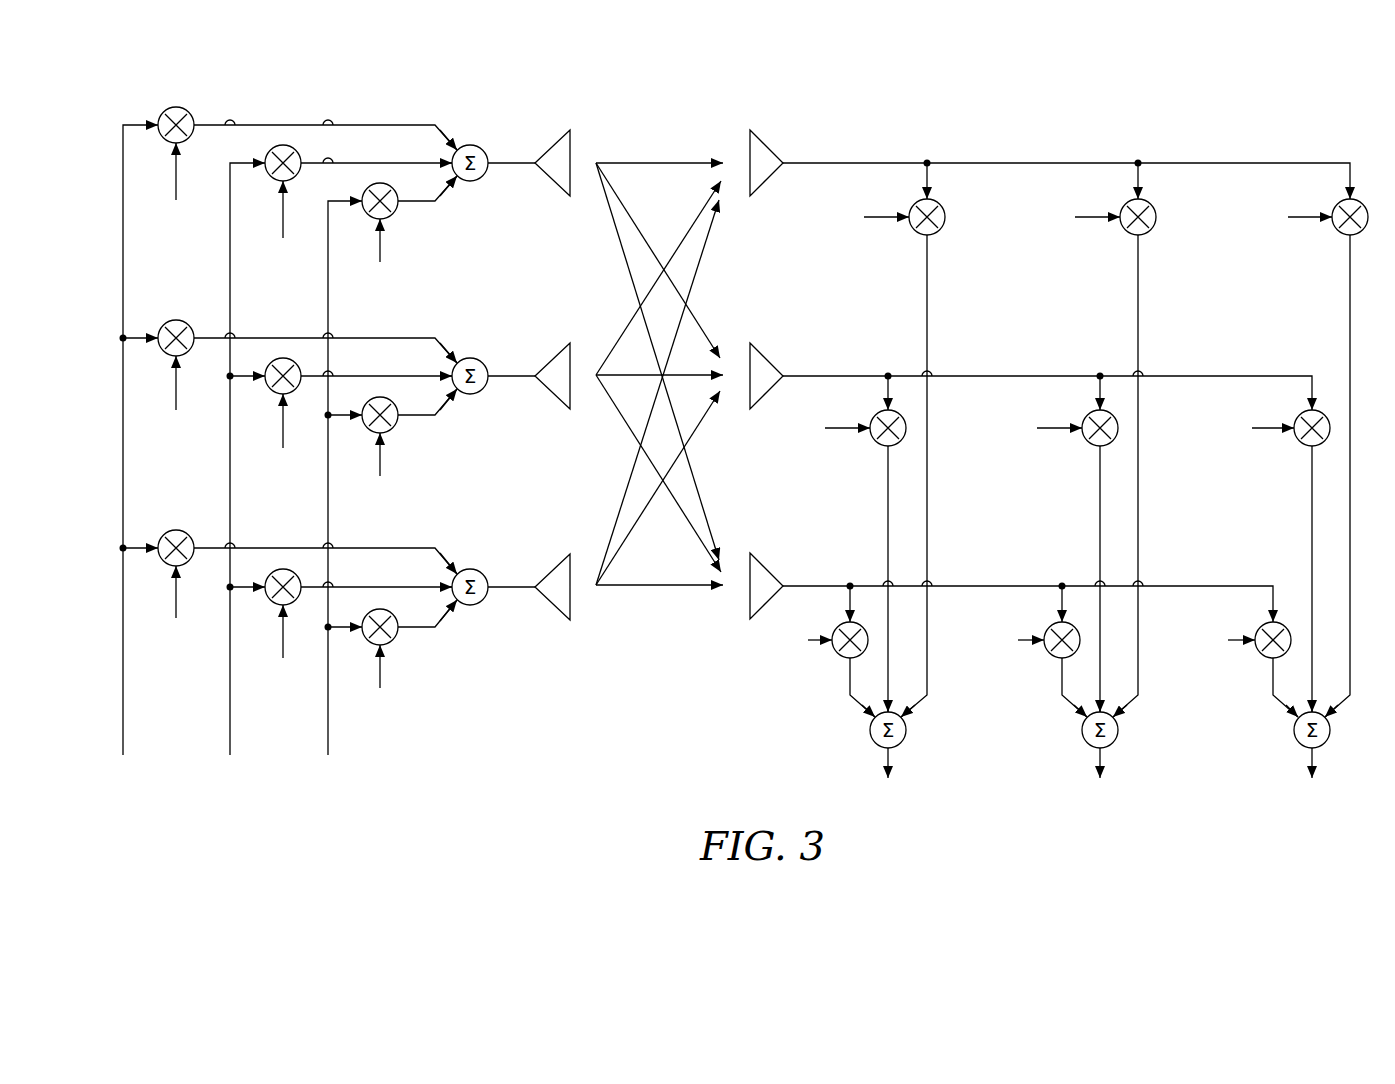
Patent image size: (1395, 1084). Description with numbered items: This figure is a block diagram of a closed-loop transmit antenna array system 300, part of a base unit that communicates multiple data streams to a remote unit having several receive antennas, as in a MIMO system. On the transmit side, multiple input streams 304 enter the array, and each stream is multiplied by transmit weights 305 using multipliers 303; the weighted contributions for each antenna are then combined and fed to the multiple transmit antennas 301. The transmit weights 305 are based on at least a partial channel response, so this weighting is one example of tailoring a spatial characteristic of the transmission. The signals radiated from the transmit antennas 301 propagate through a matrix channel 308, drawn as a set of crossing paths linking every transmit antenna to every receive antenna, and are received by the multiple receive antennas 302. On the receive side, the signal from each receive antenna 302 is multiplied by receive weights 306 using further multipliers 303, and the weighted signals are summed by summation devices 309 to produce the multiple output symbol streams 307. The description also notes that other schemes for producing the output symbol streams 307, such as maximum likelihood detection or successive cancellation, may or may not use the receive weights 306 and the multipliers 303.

The MIMO communication system 300 is at (1322, 64).
The transmit antennas 301 is at (523, 549).
The receive antennas 302 is at (772, 547).
The multipliers 303 is at (1254, 628).
The input streams 304 is at (368, 802).
The transmit weights 305 is at (436, 686).
The receive weights 306 is at (1240, 700).
The output symbol streams 307 is at (1278, 795).
The matrix channel 308 is at (631, 160).
The summation devices 309 is at (1298, 746).